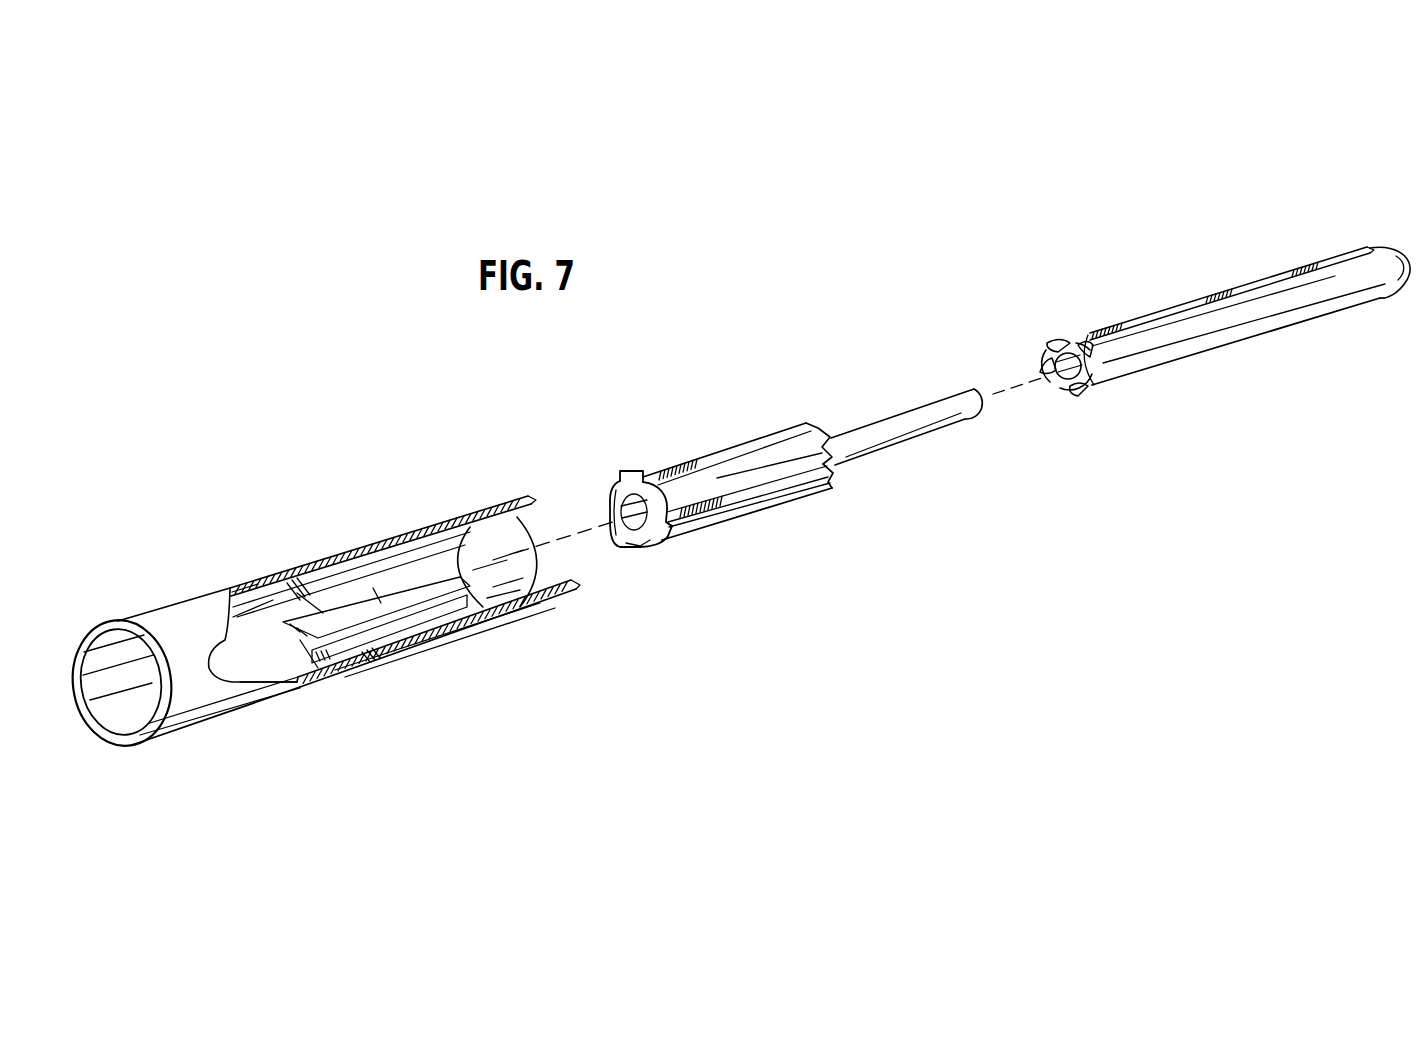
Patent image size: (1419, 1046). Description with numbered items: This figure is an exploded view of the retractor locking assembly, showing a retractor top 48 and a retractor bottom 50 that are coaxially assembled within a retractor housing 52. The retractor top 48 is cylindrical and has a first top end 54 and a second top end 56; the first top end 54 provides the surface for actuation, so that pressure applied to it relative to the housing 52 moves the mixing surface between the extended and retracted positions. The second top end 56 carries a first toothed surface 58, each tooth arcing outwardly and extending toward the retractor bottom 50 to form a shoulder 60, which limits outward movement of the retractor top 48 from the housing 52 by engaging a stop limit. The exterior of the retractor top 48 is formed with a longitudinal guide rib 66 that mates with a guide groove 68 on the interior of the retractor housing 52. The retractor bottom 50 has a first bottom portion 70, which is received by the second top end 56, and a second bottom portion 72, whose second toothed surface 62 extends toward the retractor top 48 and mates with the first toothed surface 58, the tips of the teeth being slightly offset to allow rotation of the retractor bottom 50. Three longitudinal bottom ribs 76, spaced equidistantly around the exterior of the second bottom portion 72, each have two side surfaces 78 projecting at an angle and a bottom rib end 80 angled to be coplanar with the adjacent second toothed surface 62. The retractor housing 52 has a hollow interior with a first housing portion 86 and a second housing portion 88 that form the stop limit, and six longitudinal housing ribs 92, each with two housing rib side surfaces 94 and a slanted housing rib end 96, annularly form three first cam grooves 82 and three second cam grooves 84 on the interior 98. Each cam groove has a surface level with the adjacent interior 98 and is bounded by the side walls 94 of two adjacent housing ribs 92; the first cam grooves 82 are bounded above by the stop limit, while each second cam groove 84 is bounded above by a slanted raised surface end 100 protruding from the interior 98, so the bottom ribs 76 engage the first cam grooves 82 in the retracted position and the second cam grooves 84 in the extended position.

The retractor top 48 is at (1189, 268).
The retractor bottom 50 is at (704, 410).
The retractor housing 52 is at (330, 478).
The first top end 54 is at (1400, 248).
The second top end 56 is at (1080, 403).
The first toothed surface 58 is at (1040, 375).
The shoulder 60 is at (1080, 335).
The second toothed surface 62 is at (828, 468).
The longitudinal guide rib 66 is at (1262, 283).
The guide groove 68 is at (238, 592).
The first bottom portion 70 is at (866, 448).
The second bottom portion 72 is at (696, 504).
The longitudinal bottom rib 76 is at (612, 488).
The side surfaces 78 is at (648, 472).
The bottom rib end 80 is at (820, 415).
The first cam groove 82 is at (334, 662).
The second cam groove 84 is at (306, 605).
The first housing portion 86 is at (488, 548).
The second housing portion 88 is at (244, 636).
The longitudinal housing rib 92 is at (340, 610).
The housing rib side surface 94 is at (366, 672).
The slanted housing rib end 96 is at (303, 635).
The interior 98 is at (246, 673).
The slanted raised surface end 100 is at (320, 602).